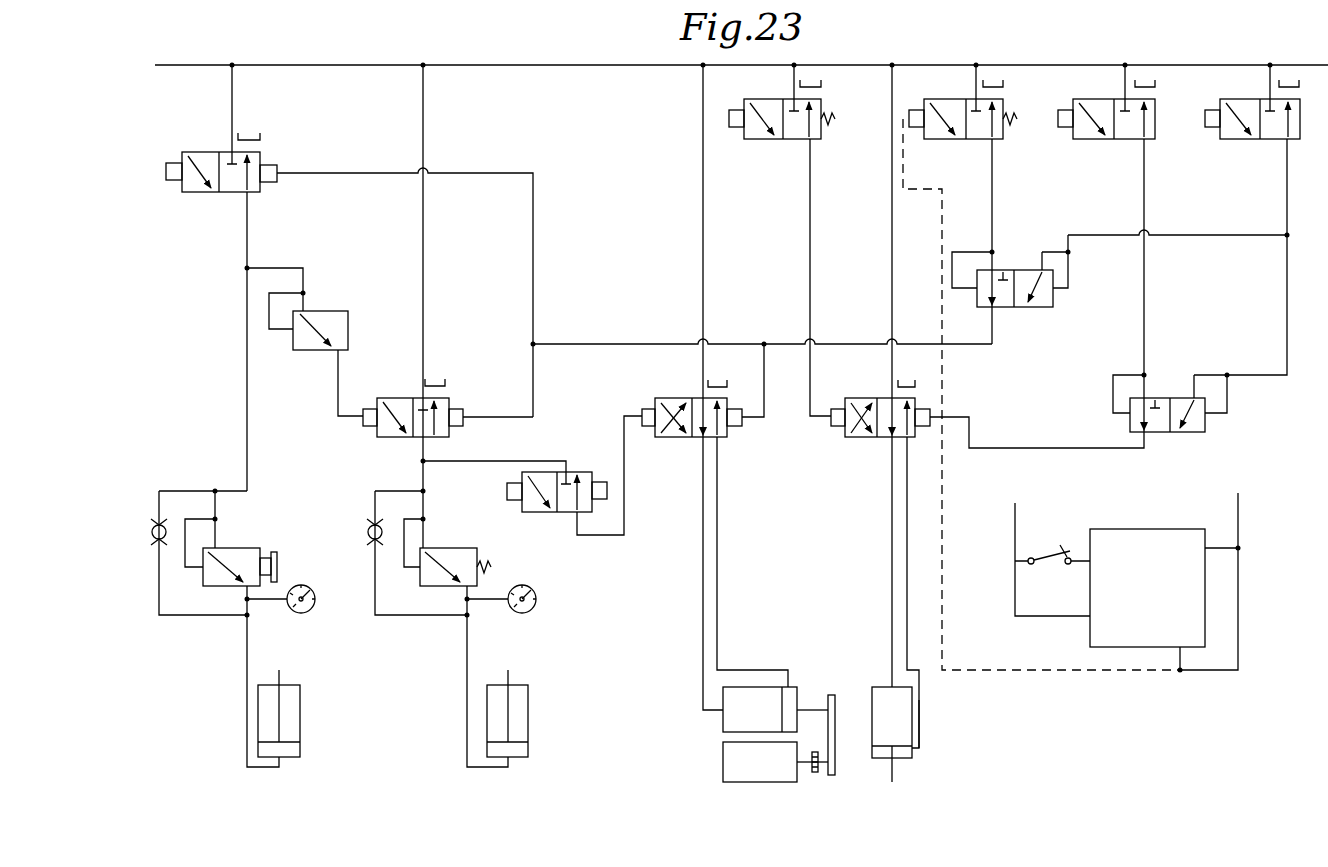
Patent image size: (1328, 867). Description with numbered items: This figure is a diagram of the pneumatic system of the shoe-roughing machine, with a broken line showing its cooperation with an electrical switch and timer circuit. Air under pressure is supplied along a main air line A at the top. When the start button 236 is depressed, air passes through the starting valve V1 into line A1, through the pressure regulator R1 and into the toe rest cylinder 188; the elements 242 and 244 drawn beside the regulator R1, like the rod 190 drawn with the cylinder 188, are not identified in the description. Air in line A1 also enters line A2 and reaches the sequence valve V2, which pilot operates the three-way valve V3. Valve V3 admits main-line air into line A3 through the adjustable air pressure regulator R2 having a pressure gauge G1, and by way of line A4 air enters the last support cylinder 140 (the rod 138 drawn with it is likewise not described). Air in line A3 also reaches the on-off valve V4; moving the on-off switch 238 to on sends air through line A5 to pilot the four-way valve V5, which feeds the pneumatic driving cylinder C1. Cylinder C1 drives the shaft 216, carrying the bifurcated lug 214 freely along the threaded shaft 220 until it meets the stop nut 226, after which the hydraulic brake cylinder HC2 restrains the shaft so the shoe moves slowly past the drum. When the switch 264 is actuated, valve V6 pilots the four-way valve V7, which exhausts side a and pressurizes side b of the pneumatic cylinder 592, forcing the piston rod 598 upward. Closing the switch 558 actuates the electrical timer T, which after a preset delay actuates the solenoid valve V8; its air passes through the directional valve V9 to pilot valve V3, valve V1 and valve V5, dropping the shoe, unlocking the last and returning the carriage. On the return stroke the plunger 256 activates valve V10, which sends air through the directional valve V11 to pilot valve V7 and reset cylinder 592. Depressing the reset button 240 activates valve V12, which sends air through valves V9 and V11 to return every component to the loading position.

The main air line A is at (311, 65).
The air line A1 is at (247, 335).
The air line A2 is at (278, 268).
The air line A3 is at (423, 460).
The air line A4 is at (470, 628).
The air line A5 is at (624, 448).
The starting valve V1 is at (234, 196).
The sequence valve V2 is at (333, 302).
The three-way valve V3 is at (398, 397).
The on-off valve V4 is at (566, 513).
The four-way valve V5 is at (690, 438).
The valve V6 is at (790, 141).
The four-way valve V7 is at (877, 438).
The solenoid valve V8 is at (972, 141).
The directional valve V9 is at (1001, 310).
The valve V10 is at (1128, 141).
The directional valve V11 is at (1201, 434).
The valve V12 is at (1274, 141).
The pressure regulator R1 is at (219, 533).
The adjustable air pressure regulator R2 is at (437, 533).
The pressure gauge G1 is at (523, 590).
The pneumatic driving cylinder C1 is at (723, 727).
The hydraulic brake cylinder HC2 is at (753, 783).
The electrical timer T is at (1147, 588).
The start button 236 is at (172, 183).
The on-off switch 238 is at (507, 492).
The reset button 240 is at (1209, 128).
The adjusting knob 242 is at (274, 554).
The pressure gauge 244 is at (302, 590).
The plunger 256 is at (1061, 128).
The switch 264 is at (736, 128).
The piston rod 138 is at (509, 680).
The last support cylinder 140 is at (529, 717).
The toe rest cylinder 188 is at (300, 717).
The piston rod 190 is at (280, 680).
The bifurcated lug 214 is at (830, 697).
The shaft 216 is at (836, 710).
The threaded shaft 220 is at (836, 765).
The stop nut 226 is at (816, 774).
The switch 558 is at (1056, 560).
The pneumatic cylinder 592 is at (908, 709).
The piston rod 598 is at (895, 776).
The side a of the pneumatic cylinder a is at (921, 721).
The side b of the pneumatic cylinder b is at (915, 751).